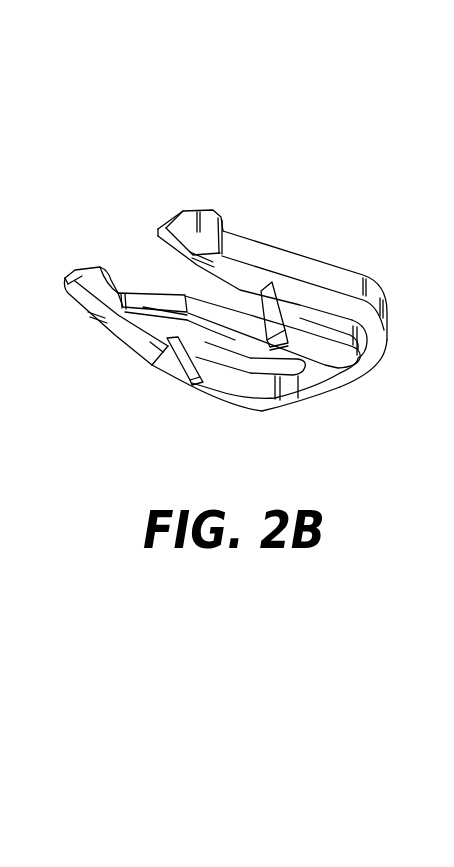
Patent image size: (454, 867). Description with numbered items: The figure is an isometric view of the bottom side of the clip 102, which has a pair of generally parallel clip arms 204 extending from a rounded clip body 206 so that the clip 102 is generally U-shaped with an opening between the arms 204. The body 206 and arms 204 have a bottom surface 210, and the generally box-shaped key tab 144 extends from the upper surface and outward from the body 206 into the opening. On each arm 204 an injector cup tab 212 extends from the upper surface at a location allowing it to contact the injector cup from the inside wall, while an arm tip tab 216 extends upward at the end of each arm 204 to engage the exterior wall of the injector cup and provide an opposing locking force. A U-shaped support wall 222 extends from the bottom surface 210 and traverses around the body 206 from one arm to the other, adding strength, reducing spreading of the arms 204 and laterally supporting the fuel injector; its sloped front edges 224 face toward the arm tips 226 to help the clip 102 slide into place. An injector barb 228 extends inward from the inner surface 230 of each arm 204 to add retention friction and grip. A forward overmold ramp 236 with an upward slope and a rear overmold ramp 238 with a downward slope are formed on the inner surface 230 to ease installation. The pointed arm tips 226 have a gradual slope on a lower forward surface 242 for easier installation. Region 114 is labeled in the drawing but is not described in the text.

The clip 102 is at (104, 79).
The upper surface 114 is at (180, 208).
The key tab 144 is at (273, 330).
The clip arms 204 is at (257, 216).
The clip body 206 is at (346, 239).
The bottom surface 210 is at (382, 357).
The injector cup tab 212 is at (170, 290).
The arm tip tab 216 is at (207, 207).
The support wall 222 is at (338, 398).
The sloped front edges 224 is at (282, 292).
The arm tips 226 is at (157, 225).
The injector barb 228 is at (133, 288).
The inner surface 230 is at (218, 350).
The forward overmold ramp 236 is at (155, 363).
The rear overmold ramp 238 is at (218, 345).
The lower forward surface 242 is at (63, 287).